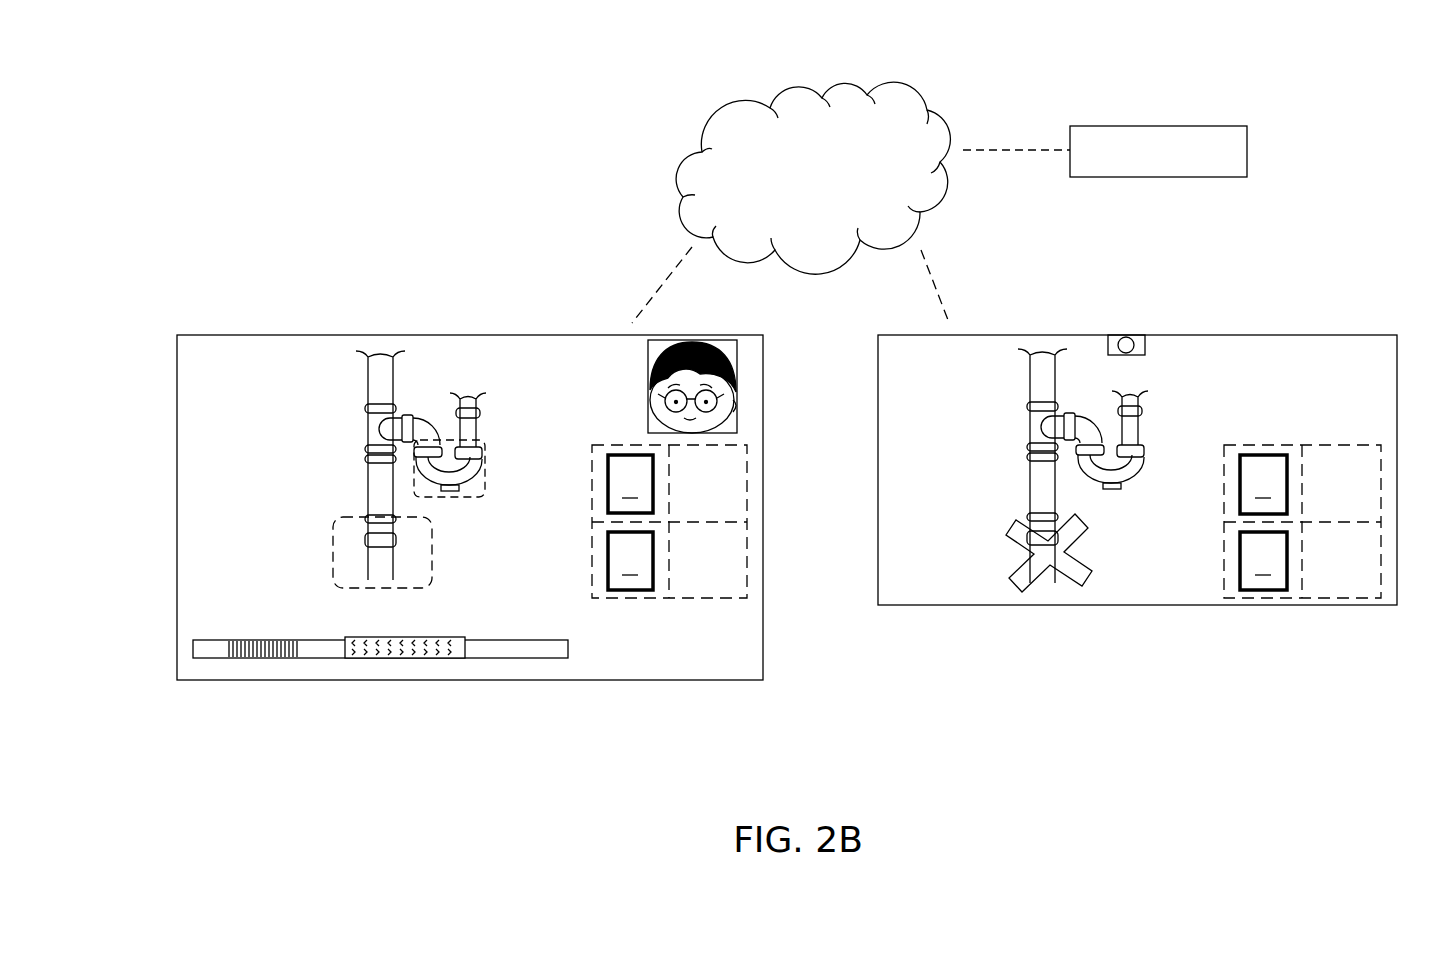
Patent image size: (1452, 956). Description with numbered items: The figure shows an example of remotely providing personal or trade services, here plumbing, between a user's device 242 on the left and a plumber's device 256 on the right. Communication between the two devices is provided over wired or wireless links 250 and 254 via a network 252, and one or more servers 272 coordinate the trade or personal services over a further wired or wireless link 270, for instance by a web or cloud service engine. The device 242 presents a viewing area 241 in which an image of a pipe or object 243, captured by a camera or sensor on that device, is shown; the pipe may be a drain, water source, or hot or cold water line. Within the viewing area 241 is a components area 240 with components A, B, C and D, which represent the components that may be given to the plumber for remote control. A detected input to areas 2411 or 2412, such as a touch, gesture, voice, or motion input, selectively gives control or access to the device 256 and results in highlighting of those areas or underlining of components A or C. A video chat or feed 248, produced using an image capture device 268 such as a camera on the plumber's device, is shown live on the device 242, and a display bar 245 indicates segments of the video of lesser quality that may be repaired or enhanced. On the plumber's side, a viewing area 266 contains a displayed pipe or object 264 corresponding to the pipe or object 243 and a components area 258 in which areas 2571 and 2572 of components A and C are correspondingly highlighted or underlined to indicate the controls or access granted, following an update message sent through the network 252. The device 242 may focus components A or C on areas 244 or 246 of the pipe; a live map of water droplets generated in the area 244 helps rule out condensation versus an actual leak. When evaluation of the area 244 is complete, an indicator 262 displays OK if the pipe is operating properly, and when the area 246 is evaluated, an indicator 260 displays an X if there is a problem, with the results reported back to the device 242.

The network 252 is at (806, 80).
The wired or wireless link 270 is at (1018, 148).
The server 272 is at (1160, 126).
The wired or wireless link 250 is at (655, 295).
The wired or wireless link 254 is at (948, 302).
The viewing area 241 is at (268, 348).
The pipe or object 243 is at (367, 406).
The area 244 is at (490, 470).
The area 246 is at (333, 525).
The video chat or feed 248 is at (740, 412).
The components area 240 is at (675, 521).
The area 2411 is at (598, 483).
The area 2412 is at (579, 562).
The device 242 is at (447, 682).
The display bar 245 is at (540, 660).
The device 256 is at (1130, 607).
The viewing area 266 is at (1003, 350).
The image capture device 268 is at (1140, 335).
The displayed pipe or object 264 is at (1148, 422).
The indicator 260 is at (1012, 540).
The indicator 262 is at (1103, 518).
The components area 258 is at (1262, 565).
The area 2571 is at (1240, 503).
The area 2572 is at (1215, 561).